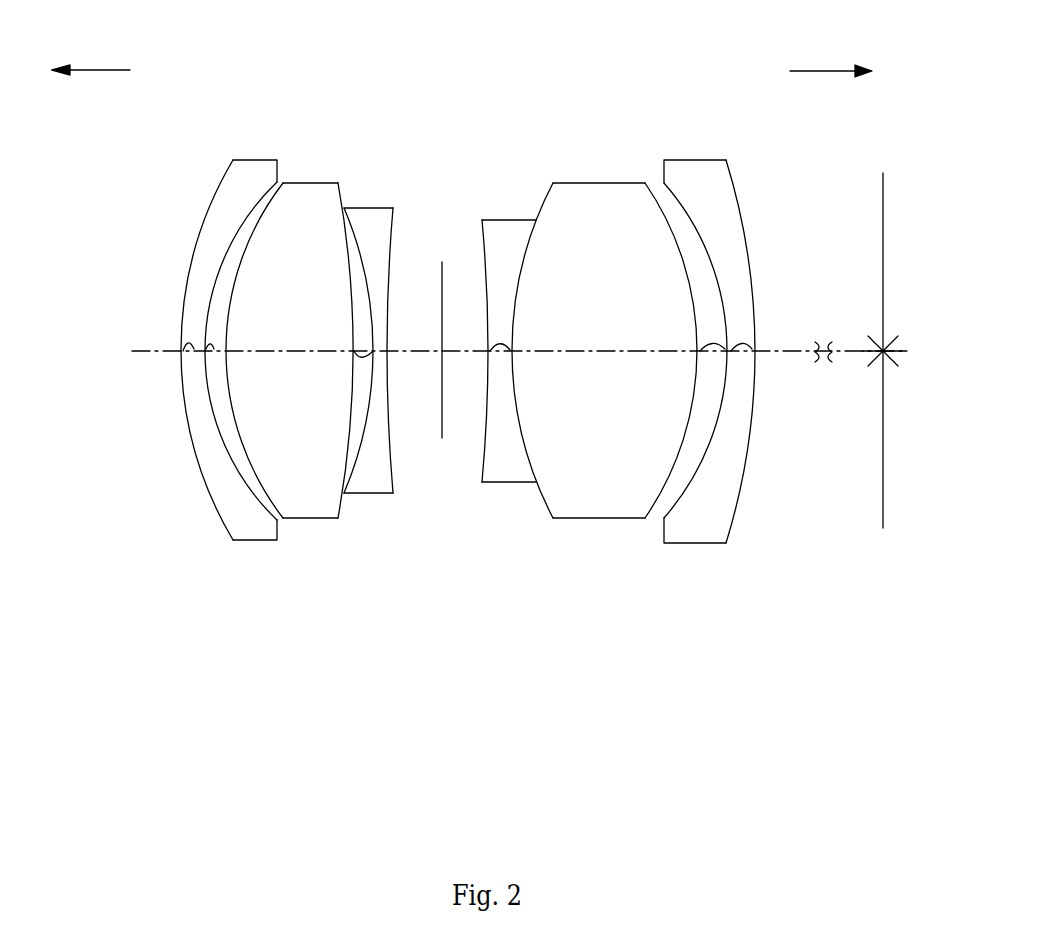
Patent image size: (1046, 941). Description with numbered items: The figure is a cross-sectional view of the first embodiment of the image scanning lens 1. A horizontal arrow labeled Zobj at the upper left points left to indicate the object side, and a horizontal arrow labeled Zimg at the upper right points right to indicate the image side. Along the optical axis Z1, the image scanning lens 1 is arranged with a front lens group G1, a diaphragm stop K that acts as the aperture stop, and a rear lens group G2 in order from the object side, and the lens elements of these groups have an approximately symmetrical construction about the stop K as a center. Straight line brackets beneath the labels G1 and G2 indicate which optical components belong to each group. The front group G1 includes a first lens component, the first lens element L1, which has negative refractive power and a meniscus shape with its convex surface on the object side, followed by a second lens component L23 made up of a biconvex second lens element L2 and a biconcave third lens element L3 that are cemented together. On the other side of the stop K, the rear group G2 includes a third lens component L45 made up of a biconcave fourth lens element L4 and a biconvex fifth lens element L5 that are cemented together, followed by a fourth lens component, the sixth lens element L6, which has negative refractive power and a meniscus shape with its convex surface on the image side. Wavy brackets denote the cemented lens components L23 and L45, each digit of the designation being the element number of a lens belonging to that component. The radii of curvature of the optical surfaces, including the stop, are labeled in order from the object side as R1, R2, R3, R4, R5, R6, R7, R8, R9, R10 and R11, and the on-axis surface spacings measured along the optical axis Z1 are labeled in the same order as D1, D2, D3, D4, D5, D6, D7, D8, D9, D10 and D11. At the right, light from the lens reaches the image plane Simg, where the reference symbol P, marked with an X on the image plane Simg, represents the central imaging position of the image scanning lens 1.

The image scanning lens 1 is at (638, 68).
The front lens group G1 is at (398, 645).
The rear lens group G2 is at (755, 643).
The first lens element L1 is at (258, 532).
The second lens element L2 is at (313, 497).
The third lens element L3 is at (377, 470).
The fourth lens element L4 is at (512, 450).
The fifth lens element L5 is at (573, 493).
The sixth lens element L6 is at (730, 527).
The second lens component L23 is at (388, 596).
The third lens component L45 is at (587, 596).
The radius of curvature of first surface R1 is at (213, 197).
The radius of curvature of second surface R2 is at (232, 248).
The radius of curvature of third surface R3 is at (266, 198).
The radius of curvature of fourth surface R4 is at (338, 197).
The radius of curvature of fifth surface R5 is at (390, 253).
The radius of curvature of sixth surface R6 is at (442, 283).
The radius of curvature of seventh surface R7 is at (482, 257).
The radius of curvature of eighth surface R8 is at (545, 199).
The radius of curvature of ninth surface R9 is at (672, 215).
The radius of curvature of tenth surface R10 is at (712, 255).
The radius of curvature of eleventh surface R11 is at (733, 196).
The first on-axis surface spacing D1 is at (176, 343).
The second on-axis surface spacing D2 is at (213, 340).
The third on-axis surface spacing D3 is at (292, 333).
The fourth on-axis surface spacing D4 is at (376, 356).
The fifth on-axis surface spacing D5 is at (412, 333).
The sixth on-axis surface spacing D6 is at (466, 333).
The seventh on-axis surface spacing D7 is at (503, 338).
The eighth on-axis surface spacing D8 is at (609, 333).
The ninth on-axis surface spacing D9 is at (718, 343).
The tenth on-axis surface spacing D10 is at (757, 340).
The eleventh on-axis surface spacing D11 is at (811, 369).
The diaphragm stop K is at (442, 410).
The central imaging position P is at (893, 347).
The optical axis Z1 is at (143, 353).
The object side arrow Zobj is at (97, 70).
The image side arrow Zimg is at (828, 72).
The image plane Simg is at (883, 203).